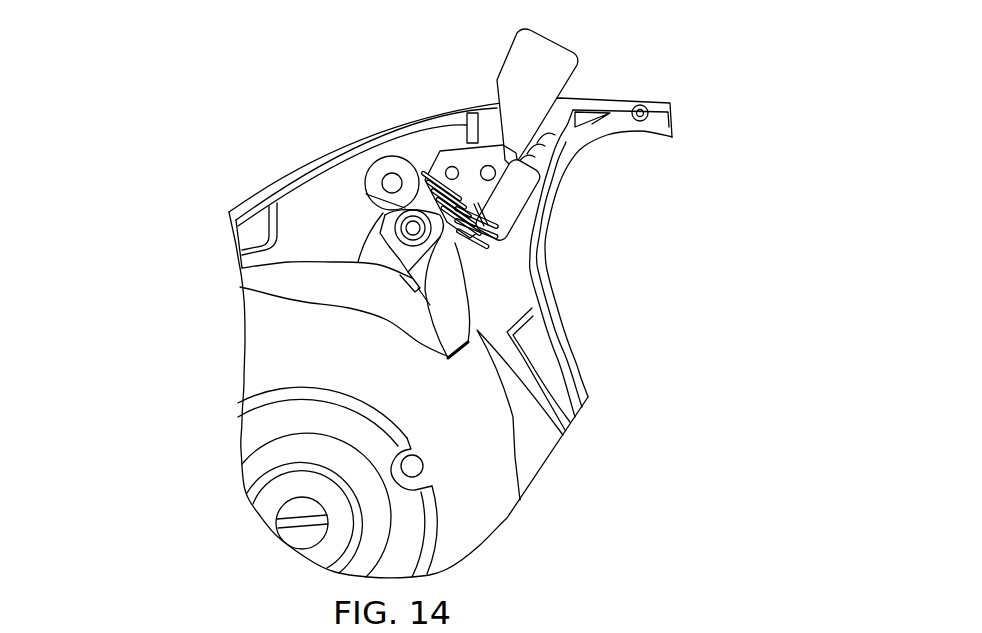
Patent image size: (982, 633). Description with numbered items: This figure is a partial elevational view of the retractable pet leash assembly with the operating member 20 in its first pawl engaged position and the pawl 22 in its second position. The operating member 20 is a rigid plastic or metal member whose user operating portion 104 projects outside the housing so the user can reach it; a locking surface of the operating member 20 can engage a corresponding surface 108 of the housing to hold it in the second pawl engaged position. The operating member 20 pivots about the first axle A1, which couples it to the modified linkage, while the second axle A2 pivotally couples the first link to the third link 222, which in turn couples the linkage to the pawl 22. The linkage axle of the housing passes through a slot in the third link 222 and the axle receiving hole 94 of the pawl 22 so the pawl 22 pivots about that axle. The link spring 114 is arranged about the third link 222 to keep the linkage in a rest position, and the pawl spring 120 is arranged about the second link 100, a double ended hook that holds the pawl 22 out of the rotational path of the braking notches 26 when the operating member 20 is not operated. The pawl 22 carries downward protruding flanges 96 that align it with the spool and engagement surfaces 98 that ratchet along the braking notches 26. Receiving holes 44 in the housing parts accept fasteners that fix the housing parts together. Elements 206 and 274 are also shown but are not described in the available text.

The user operating portion 104 is at (563, 40).
The operating member 20 is at (577, 75).
The ratchet teeth 206 is at (500, 123).
The second axle A2 is at (448, 166).
The link spring 114 is at (422, 168).
The corresponding surface 108 is at (460, 150).
The receiving hole 44 is at (382, 182).
The third link 222 is at (378, 203).
The downward protruding flange 96 is at (357, 258).
The axle receiving hole 94 is at (393, 238).
The braking notch 26 is at (422, 338).
The engagement surface 98 is at (470, 345).
The pawl spring 120 is at (484, 252).
The second link 100 is at (510, 250).
The pawl 22 is at (480, 305).
The first axle A1 is at (497, 173).
The block 274 is at (508, 195).